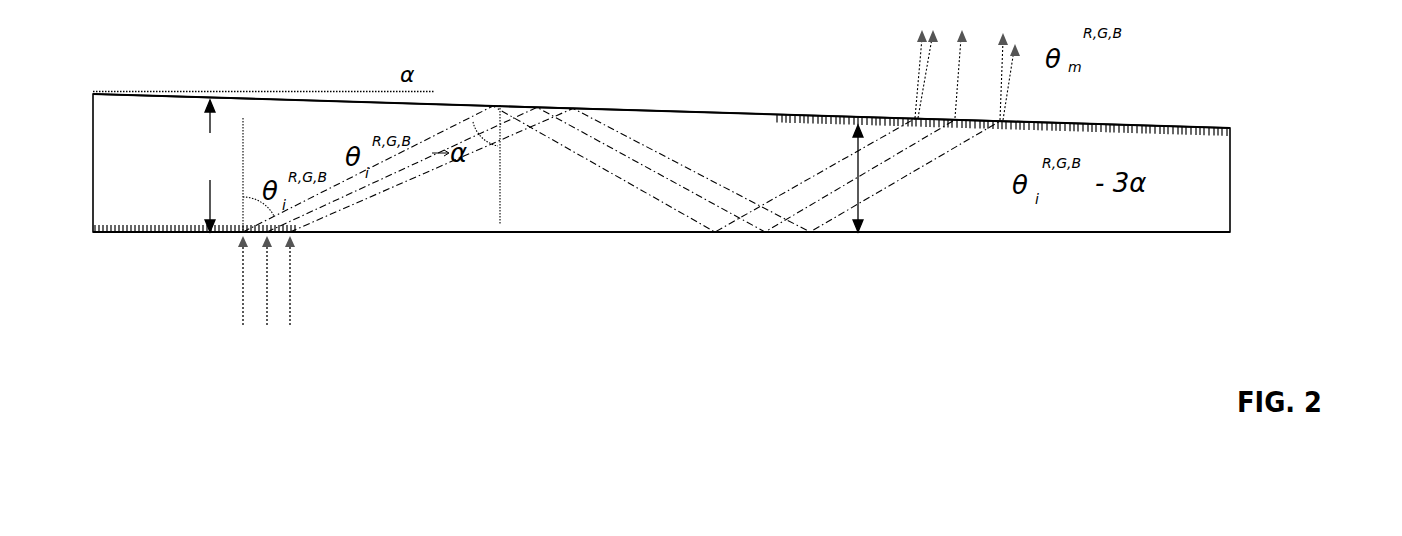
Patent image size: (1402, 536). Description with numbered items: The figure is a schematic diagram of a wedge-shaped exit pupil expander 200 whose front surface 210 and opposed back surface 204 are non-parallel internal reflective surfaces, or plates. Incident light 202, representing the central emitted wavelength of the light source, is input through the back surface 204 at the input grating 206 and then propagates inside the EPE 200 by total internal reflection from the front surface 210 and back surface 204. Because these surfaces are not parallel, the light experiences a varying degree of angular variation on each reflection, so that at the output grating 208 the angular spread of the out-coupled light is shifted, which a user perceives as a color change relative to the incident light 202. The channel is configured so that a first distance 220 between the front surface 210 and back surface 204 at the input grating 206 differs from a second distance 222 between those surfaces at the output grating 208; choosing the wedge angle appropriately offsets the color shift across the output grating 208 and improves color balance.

The exit pupil expander 200 is at (333, 71).
The incident light 202 is at (330, 294).
The back surface 204 is at (903, 240).
The input grating 206 is at (175, 236).
The output grating 208 is at (1148, 128).
The front surface 210 is at (532, 104).
The first distance 220 is at (208, 166).
The second distance 222 is at (852, 202).